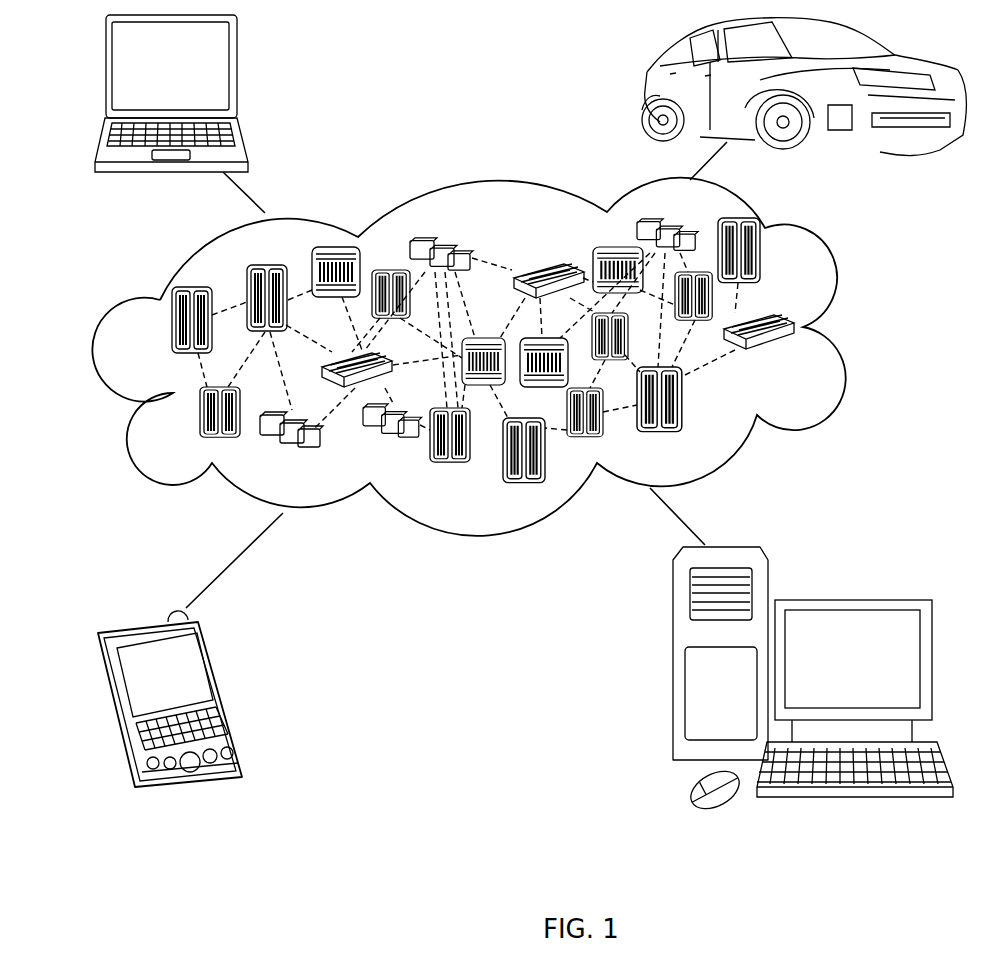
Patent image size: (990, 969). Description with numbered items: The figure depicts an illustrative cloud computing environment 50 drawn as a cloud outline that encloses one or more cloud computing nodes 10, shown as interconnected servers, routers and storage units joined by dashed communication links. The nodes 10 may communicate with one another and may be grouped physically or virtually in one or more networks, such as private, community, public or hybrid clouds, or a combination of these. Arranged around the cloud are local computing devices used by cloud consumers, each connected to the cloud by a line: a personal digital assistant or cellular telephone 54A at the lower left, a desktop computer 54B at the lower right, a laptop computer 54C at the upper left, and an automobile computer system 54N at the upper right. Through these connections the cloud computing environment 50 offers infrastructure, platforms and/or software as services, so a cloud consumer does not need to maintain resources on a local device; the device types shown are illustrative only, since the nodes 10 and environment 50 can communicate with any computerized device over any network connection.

The cloud computing node 10 is at (795, 358).
The cloud computing environment 50 is at (855, 321).
The personal digital assistant or cellular telephone 54A is at (225, 688).
The desktop computer 54B is at (851, 600).
The laptop computer 54C is at (237, 77).
The automobile computer system 54N is at (645, 96).